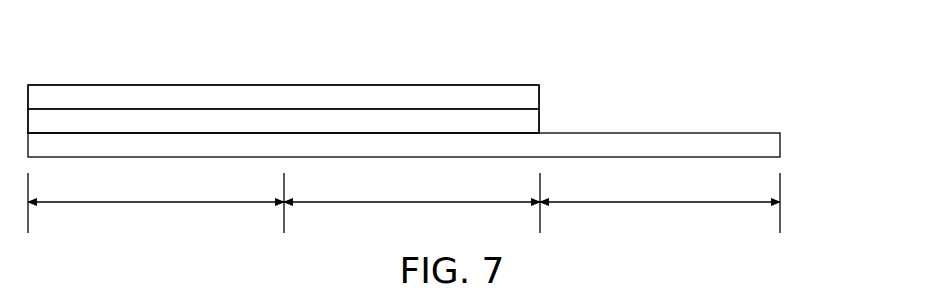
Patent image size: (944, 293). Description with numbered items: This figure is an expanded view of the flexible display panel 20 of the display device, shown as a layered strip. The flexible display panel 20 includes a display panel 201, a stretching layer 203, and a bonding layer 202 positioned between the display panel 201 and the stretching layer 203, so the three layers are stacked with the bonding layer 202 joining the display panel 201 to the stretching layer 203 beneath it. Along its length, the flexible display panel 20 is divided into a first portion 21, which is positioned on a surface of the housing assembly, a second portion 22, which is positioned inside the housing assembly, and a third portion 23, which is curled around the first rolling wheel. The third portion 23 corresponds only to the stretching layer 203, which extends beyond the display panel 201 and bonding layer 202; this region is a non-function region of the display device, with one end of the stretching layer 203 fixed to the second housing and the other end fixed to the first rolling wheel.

The flexible display panel 20 is at (126, 44).
The display panel 201 is at (539, 96).
The bonding layer 202 is at (539, 120).
The stretching layer 203 is at (780, 142).
The first portion 21 is at (156, 203).
The second portion 22 is at (412, 203).
The third portion 23 is at (660, 203).